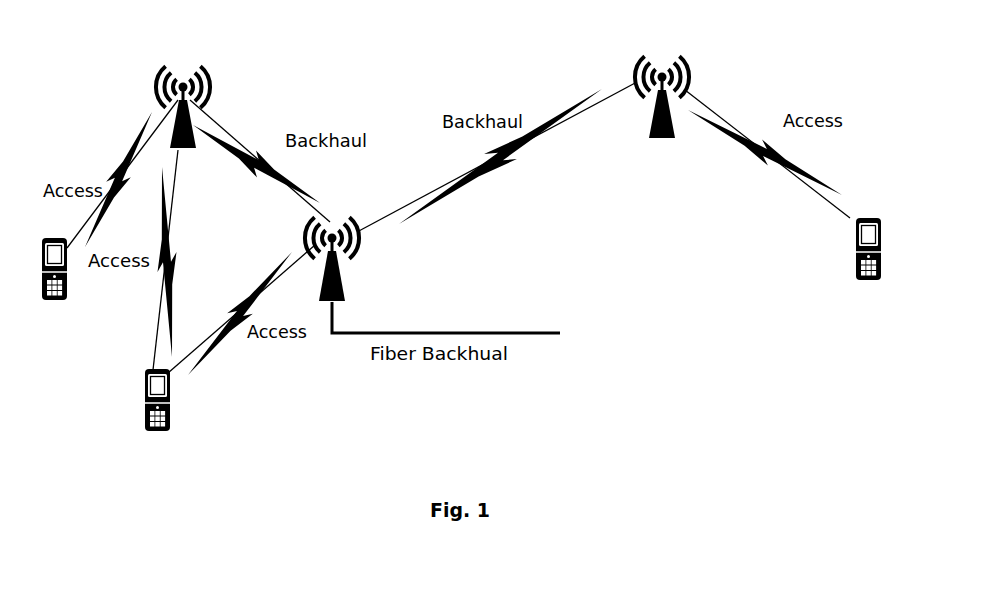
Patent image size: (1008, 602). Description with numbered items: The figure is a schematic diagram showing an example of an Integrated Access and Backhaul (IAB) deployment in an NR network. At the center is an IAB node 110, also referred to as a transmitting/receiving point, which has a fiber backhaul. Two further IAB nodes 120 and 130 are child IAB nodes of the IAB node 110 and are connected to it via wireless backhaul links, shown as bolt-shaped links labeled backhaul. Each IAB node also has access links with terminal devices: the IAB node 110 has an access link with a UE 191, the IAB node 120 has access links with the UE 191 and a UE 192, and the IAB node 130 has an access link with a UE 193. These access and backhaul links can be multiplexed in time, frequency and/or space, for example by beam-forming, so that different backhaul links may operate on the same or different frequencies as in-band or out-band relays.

The IAB node 110 is at (343, 212).
The IAB node 120 is at (199, 61).
The IAB node 130 is at (672, 53).
The UE 191 is at (157, 414).
The UE 192 is at (53, 283).
The UE 193 is at (869, 262).